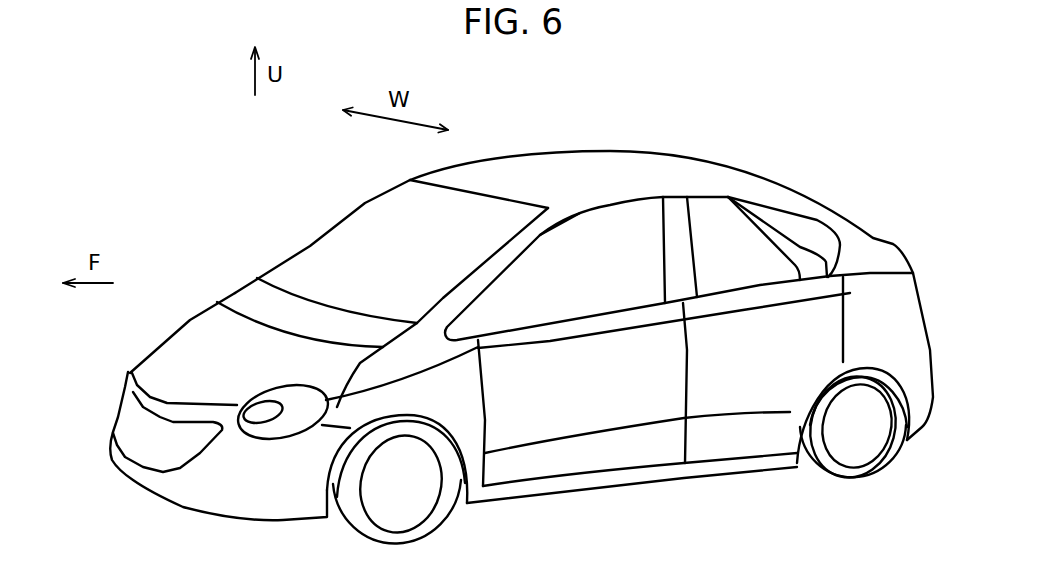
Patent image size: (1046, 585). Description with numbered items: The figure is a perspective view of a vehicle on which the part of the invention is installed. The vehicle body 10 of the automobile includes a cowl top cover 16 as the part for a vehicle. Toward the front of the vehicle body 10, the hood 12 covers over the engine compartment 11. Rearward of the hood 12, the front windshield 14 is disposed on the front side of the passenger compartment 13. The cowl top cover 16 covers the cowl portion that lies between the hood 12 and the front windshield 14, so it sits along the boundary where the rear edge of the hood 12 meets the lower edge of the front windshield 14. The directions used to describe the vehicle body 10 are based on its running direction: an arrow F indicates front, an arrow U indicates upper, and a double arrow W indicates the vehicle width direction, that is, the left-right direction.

The vehicle body 10 is at (686, 150).
The engine compartment 11 is at (162, 358).
The hood 12 is at (195, 330).
The passenger compartment 13 is at (372, 215).
The front windshield 14 is at (317, 245).
The cowl top cover 16 is at (235, 293).